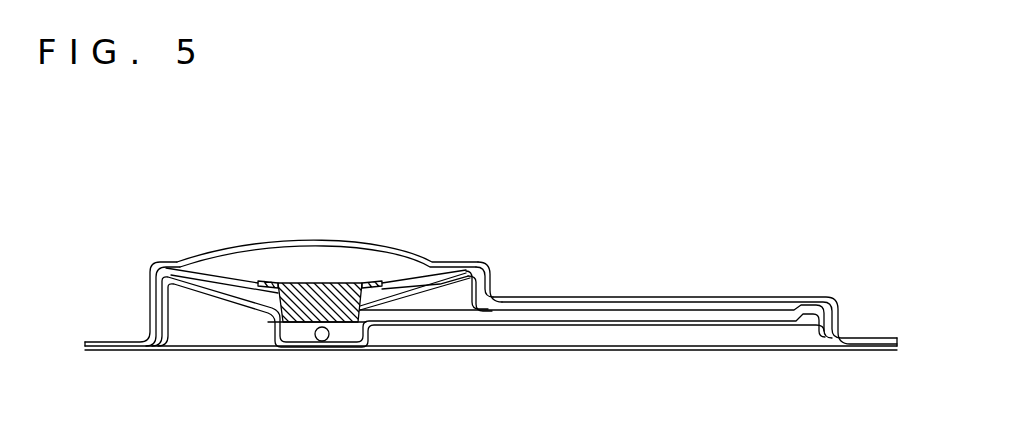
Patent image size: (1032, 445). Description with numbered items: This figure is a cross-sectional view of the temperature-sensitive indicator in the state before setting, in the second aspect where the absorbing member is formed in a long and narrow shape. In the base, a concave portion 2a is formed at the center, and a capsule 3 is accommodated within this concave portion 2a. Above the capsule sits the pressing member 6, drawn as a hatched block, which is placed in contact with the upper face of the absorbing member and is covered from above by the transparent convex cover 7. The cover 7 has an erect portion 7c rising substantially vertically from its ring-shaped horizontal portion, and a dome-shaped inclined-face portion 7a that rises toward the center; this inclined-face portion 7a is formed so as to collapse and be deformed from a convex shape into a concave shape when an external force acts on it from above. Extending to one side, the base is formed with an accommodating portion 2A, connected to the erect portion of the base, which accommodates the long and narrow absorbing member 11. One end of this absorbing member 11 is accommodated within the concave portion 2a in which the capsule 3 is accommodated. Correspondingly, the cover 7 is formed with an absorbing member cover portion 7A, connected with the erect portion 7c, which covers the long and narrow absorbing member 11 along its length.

The accommodating portion 2A is at (716, 327).
The concave portion 2a is at (273, 338).
The capsule 3 is at (323, 341).
The pressing member 6 is at (333, 293).
The cover 7 is at (491, 262).
The inclined-face portion 7a is at (298, 242).
The absorbing member cover portion 7A is at (654, 297).
The erect portion 7c is at (492, 288).
The absorbing member 11 is at (750, 308).